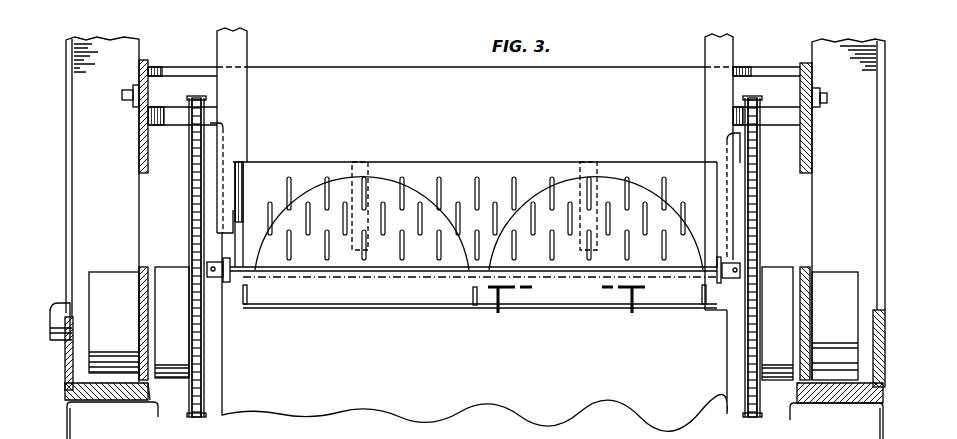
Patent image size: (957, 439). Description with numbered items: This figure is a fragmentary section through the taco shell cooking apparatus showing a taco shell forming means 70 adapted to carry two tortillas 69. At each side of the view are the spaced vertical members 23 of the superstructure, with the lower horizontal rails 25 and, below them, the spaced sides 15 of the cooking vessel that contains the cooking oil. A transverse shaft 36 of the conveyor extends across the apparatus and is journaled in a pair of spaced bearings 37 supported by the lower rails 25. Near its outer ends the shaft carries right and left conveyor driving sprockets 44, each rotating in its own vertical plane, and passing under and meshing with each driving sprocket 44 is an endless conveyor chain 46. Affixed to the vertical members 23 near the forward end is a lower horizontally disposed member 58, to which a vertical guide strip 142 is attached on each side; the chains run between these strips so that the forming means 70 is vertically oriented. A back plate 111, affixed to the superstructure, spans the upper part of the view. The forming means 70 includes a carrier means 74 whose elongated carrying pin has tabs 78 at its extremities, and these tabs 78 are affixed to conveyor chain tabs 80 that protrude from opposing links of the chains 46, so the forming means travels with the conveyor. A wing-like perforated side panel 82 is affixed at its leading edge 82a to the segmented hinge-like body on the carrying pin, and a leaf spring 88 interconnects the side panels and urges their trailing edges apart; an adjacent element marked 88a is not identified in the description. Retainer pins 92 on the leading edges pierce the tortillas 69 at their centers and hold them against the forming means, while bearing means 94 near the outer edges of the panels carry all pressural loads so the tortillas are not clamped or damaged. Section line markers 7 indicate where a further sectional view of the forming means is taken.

The section line 7- 7 is at (565, 322).
The spaced sides 15 is at (72, 430).
The vertical members 23 is at (98, 48).
The lower horizontal rails 25 is at (65, 367).
The transverse shaft 36 is at (60, 308).
The bearings 37 is at (103, 272).
The conveyor driving sprockets 44 is at (195, 244).
The endless conveyor chain 46 is at (188, 405).
The lower horizontally disposed member 58 is at (148, 61).
The tortillas 69 is at (385, 178).
The taco shell forming means 70 is at (466, 162).
The carrier means 74 is at (317, 277).
The tabs 78 is at (224, 282).
The conveyor chain tabs 80 is at (211, 278).
The perforated side panel 82 is at (497, 178).
The leading edge 82a is at (473, 272).
The leaf spring 88 is at (353, 168).
The chute 88a is at (400, 433).
The retainer pins 92 is at (357, 277).
The bearing means 94 is at (243, 182).
The back plate 111 is at (391, 77).
The guide strip 142 is at (237, 106).